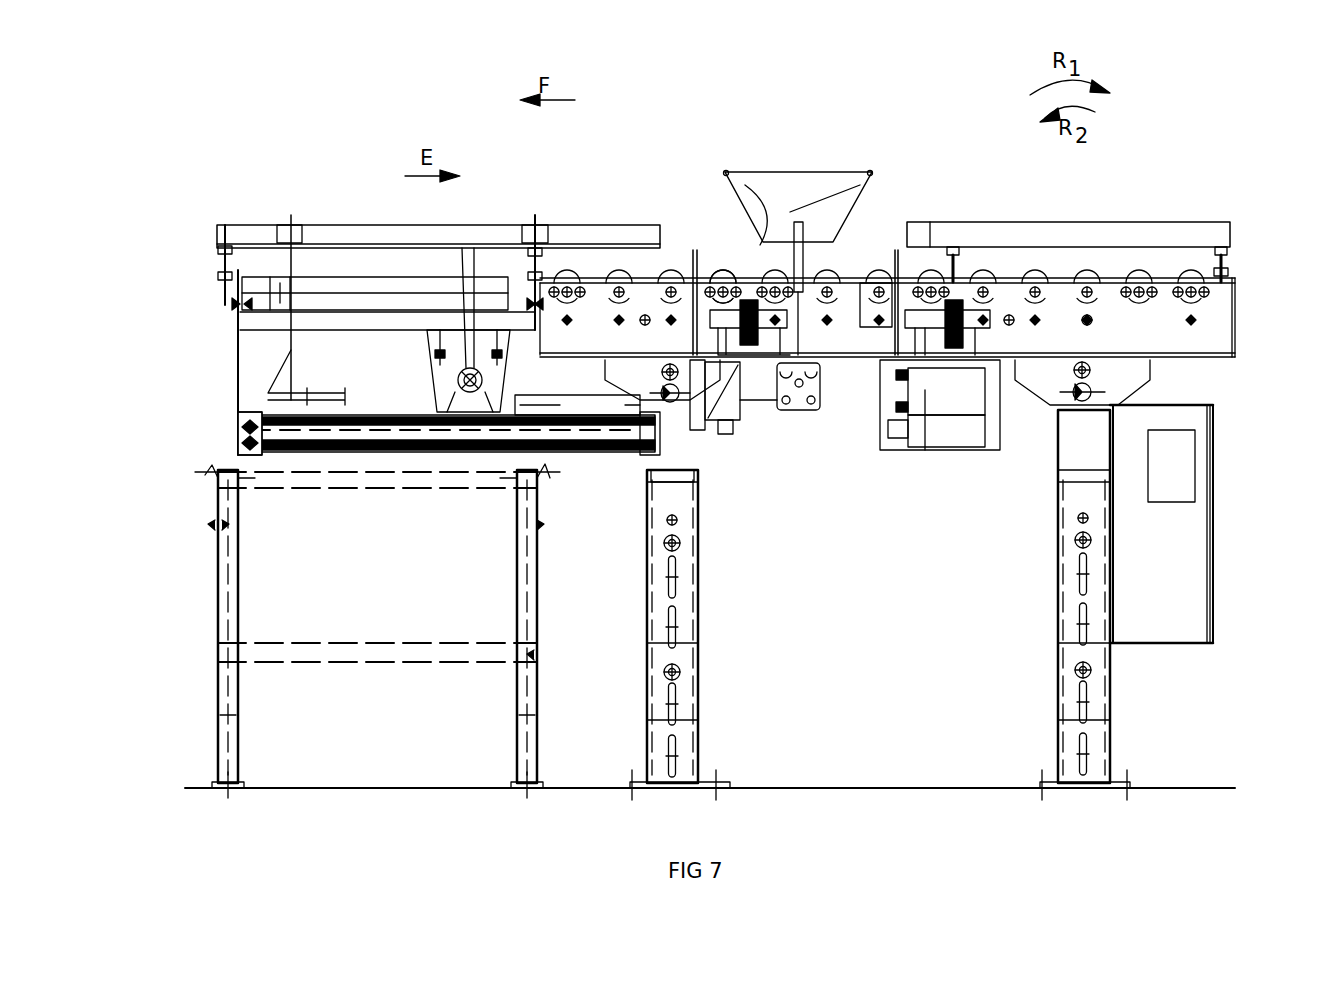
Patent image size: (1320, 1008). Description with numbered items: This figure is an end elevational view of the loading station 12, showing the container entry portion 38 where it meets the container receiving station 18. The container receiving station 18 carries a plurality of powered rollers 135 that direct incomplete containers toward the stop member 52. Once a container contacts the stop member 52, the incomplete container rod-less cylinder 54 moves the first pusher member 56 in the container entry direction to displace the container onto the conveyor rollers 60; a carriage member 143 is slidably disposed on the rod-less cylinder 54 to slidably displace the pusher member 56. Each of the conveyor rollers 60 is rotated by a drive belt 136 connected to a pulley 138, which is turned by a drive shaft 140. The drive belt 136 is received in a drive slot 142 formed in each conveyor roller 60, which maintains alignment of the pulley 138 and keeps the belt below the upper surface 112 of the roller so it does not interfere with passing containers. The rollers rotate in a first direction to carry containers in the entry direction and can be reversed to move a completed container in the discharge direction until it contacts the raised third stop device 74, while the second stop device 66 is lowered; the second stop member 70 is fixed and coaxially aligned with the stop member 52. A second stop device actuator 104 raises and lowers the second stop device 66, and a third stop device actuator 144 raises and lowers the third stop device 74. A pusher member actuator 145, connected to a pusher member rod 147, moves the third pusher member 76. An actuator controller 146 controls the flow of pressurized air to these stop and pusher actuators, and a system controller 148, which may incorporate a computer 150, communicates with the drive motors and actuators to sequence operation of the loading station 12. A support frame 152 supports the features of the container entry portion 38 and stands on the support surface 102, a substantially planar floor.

The loading station 12 is at (768, 128).
The container receiving station 18 is at (407, 302).
The container entry portion 38 is at (985, 215).
The stop member 52 is at (248, 232).
The incomplete container rod-less cylinder 54 is at (560, 445).
The first pusher member 56 is at (560, 243).
The conveyor rollers 60 is at (722, 272).
The second stop device 66 is at (896, 255).
The second stop member 70 is at (1115, 237).
The third stop device 74 is at (693, 255).
The third pusher member 76 is at (870, 180).
The support surface 102 is at (198, 765).
The second stop device actuator 104 is at (923, 440).
The upper surface 112 is at (333, 272).
The powered rollers 135 is at (255, 300).
The drive belt 136 is at (537, 250).
The pulley 138 is at (462, 395).
The drive shaft 140 is at (478, 440).
The drive slot 142 is at (470, 250).
The carriage member 143 is at (560, 432).
The third stop device actuator 144 is at (720, 422).
The pusher member actuator 145 is at (800, 410).
The actuator controller 146 is at (935, 431).
The pusher member rod 147 is at (793, 250).
The system controller 148 is at (1196, 551).
The computer 150 is at (1185, 475).
The support frame 152 is at (210, 560).